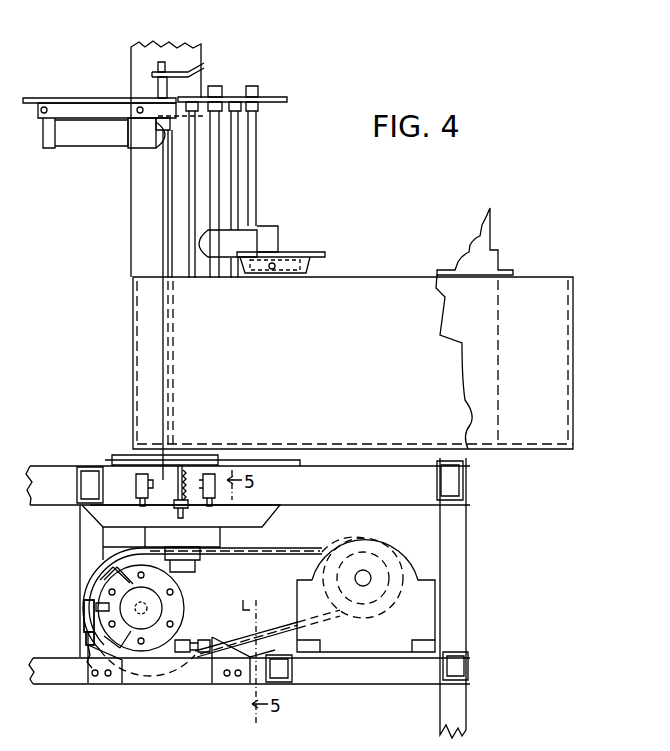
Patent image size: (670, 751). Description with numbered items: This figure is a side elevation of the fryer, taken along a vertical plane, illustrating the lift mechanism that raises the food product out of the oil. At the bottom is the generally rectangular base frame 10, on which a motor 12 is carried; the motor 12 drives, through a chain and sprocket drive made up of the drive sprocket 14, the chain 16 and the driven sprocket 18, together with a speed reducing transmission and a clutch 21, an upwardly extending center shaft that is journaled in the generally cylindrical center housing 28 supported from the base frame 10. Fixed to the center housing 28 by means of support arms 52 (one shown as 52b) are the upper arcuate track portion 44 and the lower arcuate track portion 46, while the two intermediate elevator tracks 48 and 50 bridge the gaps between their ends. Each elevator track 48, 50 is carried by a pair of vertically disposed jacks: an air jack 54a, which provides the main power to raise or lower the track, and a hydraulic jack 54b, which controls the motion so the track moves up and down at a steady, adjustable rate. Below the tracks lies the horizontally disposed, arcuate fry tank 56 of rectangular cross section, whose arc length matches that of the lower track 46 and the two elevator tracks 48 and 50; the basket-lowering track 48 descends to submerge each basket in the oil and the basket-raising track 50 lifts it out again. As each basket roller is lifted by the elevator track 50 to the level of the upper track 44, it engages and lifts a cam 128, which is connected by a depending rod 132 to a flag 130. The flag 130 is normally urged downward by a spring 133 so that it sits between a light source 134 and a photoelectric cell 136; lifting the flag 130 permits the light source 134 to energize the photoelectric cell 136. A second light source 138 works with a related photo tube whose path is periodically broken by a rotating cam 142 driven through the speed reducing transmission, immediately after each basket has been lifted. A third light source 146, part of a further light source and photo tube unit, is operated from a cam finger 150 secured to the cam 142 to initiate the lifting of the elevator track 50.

The base frame 10 is at (77, 694).
The motor 12 is at (413, 625).
The drive sprocket 14 is at (340, 592).
The chain 16 is at (306, 560).
The driven sprocket 18 is at (120, 563).
The clutch 21 is at (222, 540).
The center housing 28 is at (142, 266).
The upper arcuate track portion 44 is at (44, 98).
The lower arcuate track portion 46 is at (322, 252).
The elevator track 48 is at (287, 98).
The elevator track 50 is at (234, 98).
The support arm 52 is at (84, 138).
The cylinder block 52b is at (262, 240).
The air jack 54a is at (220, 210).
The hydraulic jack 54b is at (190, 213).
The fry tank 56 is at (486, 341).
The cam 128 is at (206, 63).
The flag 130 is at (178, 457).
The depending rod 132 is at (166, 252).
The spring 133 is at (186, 480).
The light source 134 is at (135, 485).
The photoelectric cell 136 is at (218, 485).
The second light source 138 is at (183, 660).
The rotating cam 142 is at (115, 582).
The third light source 146 is at (88, 621).
The cam finger 150 is at (90, 600).